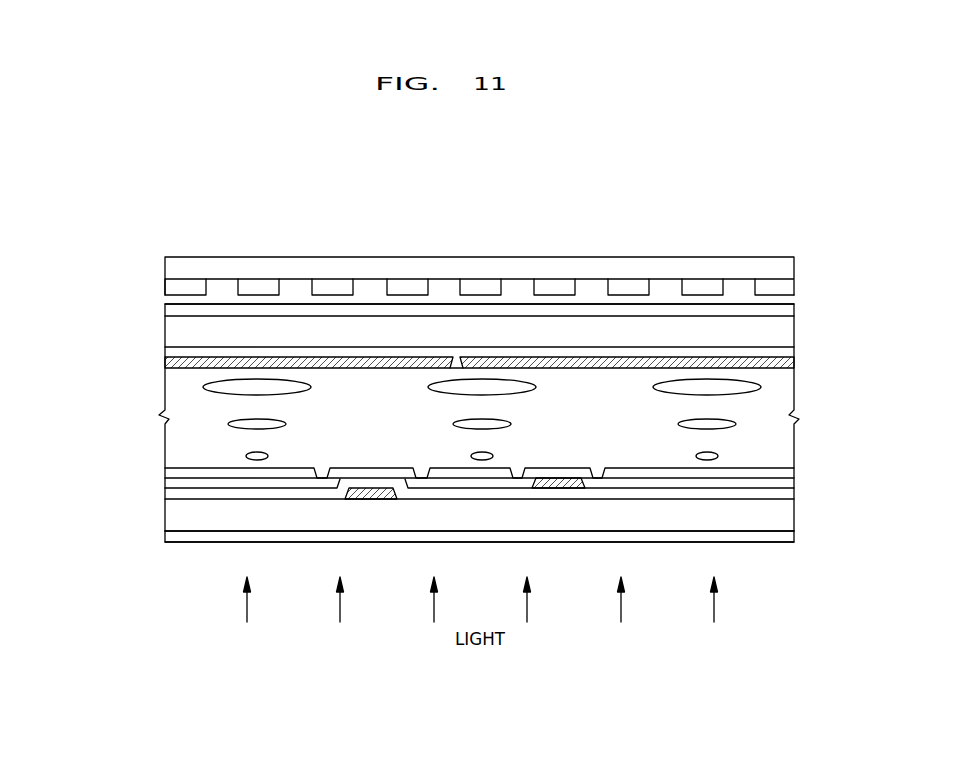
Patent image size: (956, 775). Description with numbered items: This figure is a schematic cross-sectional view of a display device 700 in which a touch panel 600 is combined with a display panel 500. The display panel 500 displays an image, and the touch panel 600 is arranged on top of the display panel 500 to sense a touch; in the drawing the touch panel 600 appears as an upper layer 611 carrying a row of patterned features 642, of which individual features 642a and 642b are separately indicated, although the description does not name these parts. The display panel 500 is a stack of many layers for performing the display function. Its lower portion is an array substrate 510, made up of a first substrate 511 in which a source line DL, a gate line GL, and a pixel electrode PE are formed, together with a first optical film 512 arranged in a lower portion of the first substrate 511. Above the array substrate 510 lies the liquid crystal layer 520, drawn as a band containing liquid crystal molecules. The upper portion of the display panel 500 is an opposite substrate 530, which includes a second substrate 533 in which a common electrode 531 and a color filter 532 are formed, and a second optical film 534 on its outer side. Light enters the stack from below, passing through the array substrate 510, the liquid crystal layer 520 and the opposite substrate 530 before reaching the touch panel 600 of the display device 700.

The display device 700 is at (741, 214).
The touch panel 600 is at (470, 231).
The base substrate of light control panel 611 is at (783, 266).
The pattern layer 642 is at (479, 231).
The first pattern 642a is at (185, 291).
The second pattern 642b is at (258, 290).
The display panel 500 is at (82, 335).
The opposite substrate 530 is at (472, 293).
The second optical film 534 is at (785, 310).
The second substrate 533 is at (785, 333).
The color filter 532 is at (785, 353).
The common electrode 531 is at (497, 362).
The liquid crystal layer 520 is at (145, 373).
The array substrate 510 is at (472, 526).
The first substrate 511 is at (783, 513).
The first optical film 512 is at (783, 538).
The pixel electrode PE is at (227, 483).
The gate line GL is at (378, 492).
The source line DL is at (563, 483).